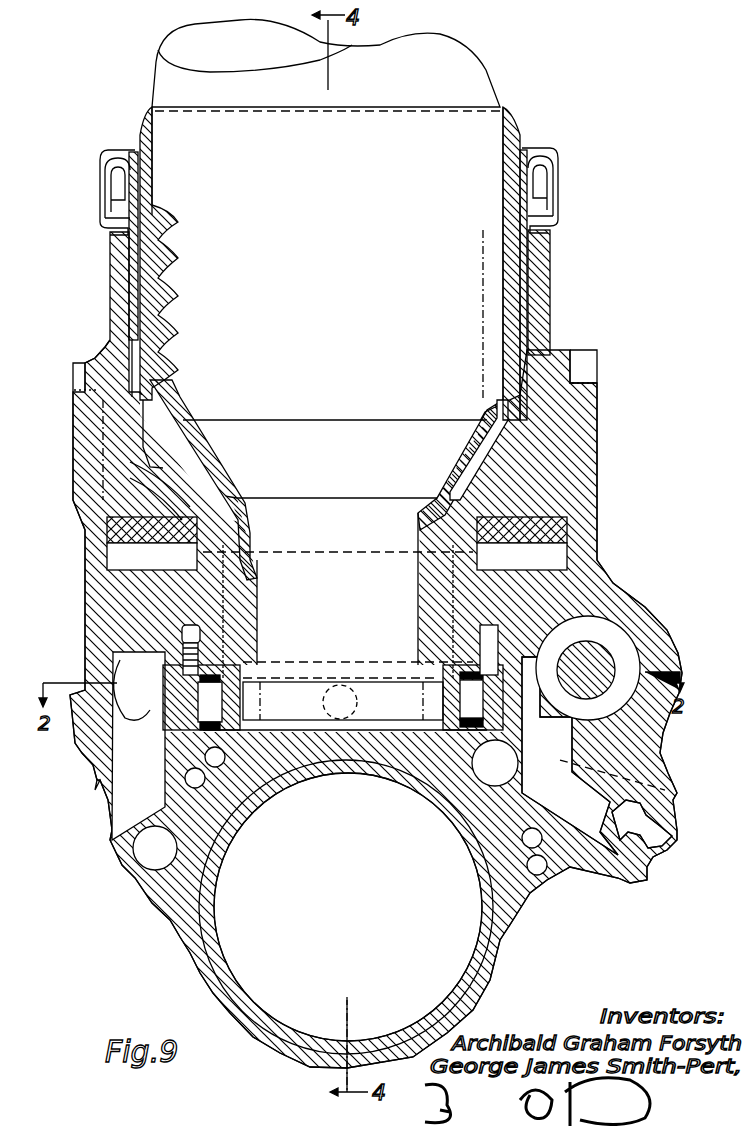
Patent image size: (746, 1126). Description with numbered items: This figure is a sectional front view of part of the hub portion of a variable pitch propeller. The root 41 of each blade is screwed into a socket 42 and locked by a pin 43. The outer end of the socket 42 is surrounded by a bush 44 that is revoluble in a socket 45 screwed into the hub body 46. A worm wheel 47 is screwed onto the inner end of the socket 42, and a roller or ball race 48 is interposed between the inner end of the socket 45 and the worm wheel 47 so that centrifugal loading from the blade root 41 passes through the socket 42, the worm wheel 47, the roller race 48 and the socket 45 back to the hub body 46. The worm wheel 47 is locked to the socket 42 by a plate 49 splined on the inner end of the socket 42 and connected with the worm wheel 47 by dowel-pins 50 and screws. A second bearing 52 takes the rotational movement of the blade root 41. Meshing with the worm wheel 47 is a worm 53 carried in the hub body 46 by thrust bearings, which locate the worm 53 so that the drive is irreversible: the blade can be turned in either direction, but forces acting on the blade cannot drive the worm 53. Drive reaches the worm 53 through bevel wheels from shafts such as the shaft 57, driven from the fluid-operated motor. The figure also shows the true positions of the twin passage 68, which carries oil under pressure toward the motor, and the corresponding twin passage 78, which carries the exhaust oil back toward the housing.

The blade root 41 is at (327, 209).
The socket 42 is at (230, 482).
The pin 43 is at (340, 700).
The bush 44 is at (132, 290).
The socket 45 is at (105, 365).
The hub body 46 is at (85, 717).
The worm wheel 47 is at (137, 623).
The roller or ball race 48 is at (118, 565).
The plate 49 is at (228, 680).
The dowel-pins 50 is at (487, 650).
The second bearing 52 is at (212, 703).
The worm 53 is at (592, 632).
The shaft 57 is at (187, 647).
The twin passage 68 is at (540, 868).
The twin passage 78 is at (243, 803).